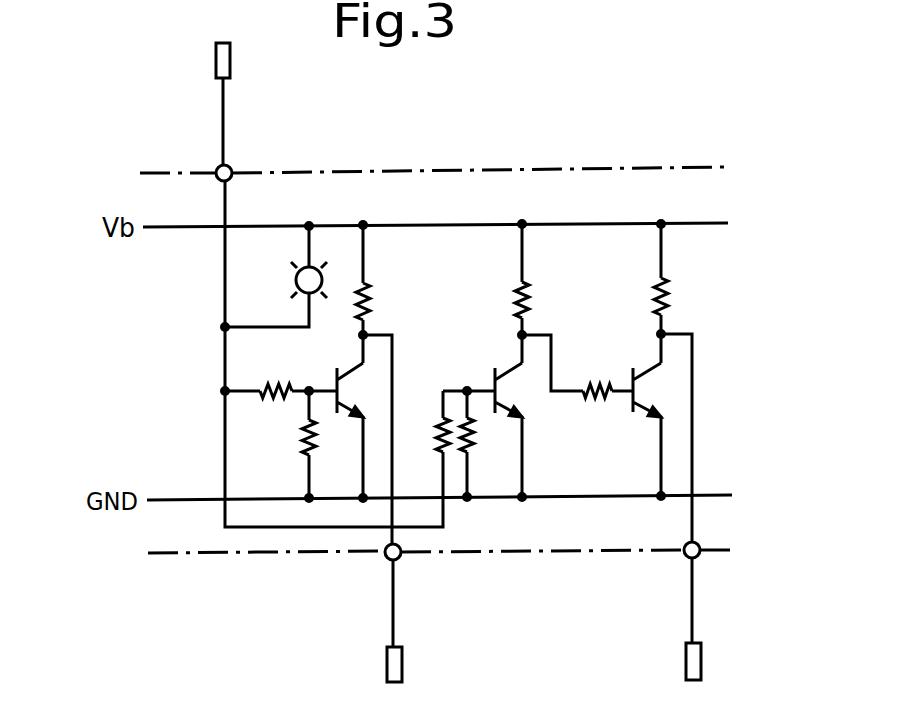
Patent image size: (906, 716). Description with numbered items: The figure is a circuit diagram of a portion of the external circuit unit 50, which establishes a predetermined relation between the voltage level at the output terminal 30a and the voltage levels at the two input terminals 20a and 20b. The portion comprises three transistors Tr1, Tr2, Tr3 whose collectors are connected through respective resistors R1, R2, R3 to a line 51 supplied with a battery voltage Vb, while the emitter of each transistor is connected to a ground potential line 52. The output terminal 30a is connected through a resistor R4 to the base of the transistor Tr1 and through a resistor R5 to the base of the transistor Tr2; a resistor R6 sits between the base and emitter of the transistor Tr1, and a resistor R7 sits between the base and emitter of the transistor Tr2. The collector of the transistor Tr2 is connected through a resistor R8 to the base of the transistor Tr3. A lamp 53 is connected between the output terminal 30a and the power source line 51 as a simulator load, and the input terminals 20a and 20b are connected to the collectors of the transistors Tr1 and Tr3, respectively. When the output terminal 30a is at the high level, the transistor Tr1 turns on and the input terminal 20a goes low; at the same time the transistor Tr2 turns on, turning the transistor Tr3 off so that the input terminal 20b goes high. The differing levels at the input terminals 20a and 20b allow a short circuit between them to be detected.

The output terminal 30a is at (232, 63).
The external circuit unit 50 is at (570, 163).
The line supplied with battery voltage 51 is at (432, 224).
The ground potential line 52 is at (597, 498).
The lamp 53 is at (296, 275).
The input terminal 20a is at (387, 665).
The input terminal 20b is at (701, 662).
The resistor R1 is at (370, 304).
The resistor R2 is at (529, 302).
The resistor R3 is at (668, 300).
The resistor R4 is at (277, 383).
The resistor R5 is at (436, 428).
The resistor R6 is at (304, 428).
The resistor R7 is at (474, 430).
The resistor R8 is at (593, 383).
The transistor Tr1 is at (363, 386).
The transistor Tr2 is at (513, 392).
The transistor Tr3 is at (663, 385).